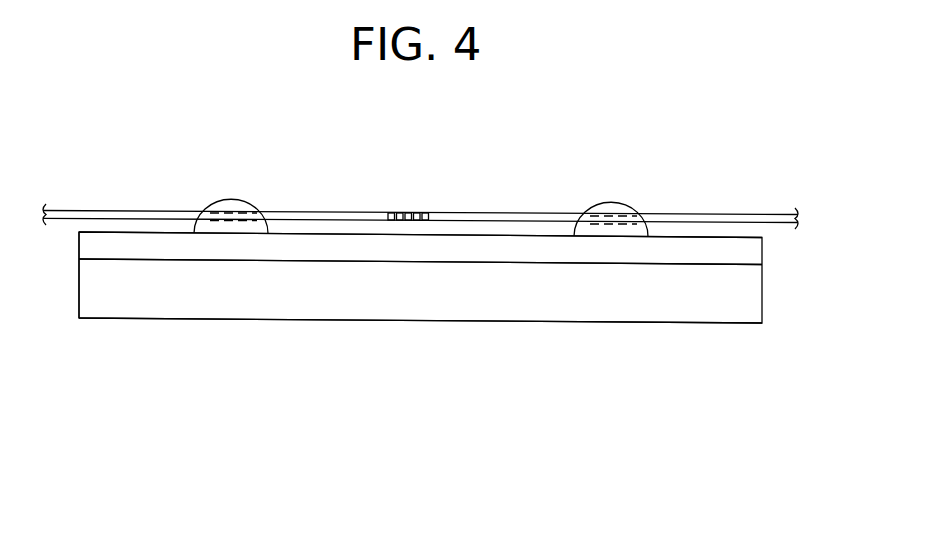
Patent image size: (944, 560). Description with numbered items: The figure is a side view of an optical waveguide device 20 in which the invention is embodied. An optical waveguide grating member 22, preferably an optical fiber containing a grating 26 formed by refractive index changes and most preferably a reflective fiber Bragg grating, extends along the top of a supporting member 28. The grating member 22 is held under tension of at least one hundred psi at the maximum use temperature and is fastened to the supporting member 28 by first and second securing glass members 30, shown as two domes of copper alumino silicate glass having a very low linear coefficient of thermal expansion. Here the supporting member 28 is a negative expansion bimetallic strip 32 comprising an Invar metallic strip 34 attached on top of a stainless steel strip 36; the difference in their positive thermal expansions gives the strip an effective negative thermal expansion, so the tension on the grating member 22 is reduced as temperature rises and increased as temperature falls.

The optical waveguide device 20 is at (156, 142).
The optical waveguide grating member 22 is at (503, 210).
The grating 26 is at (411, 207).
The supporting member 28 is at (475, 343).
The securing glass member 30 is at (232, 193).
The negative expansion bimetallic strip 32 is at (67, 271).
The Invar metallic strip 34 is at (743, 253).
The stainless steel strip 36 is at (743, 298).